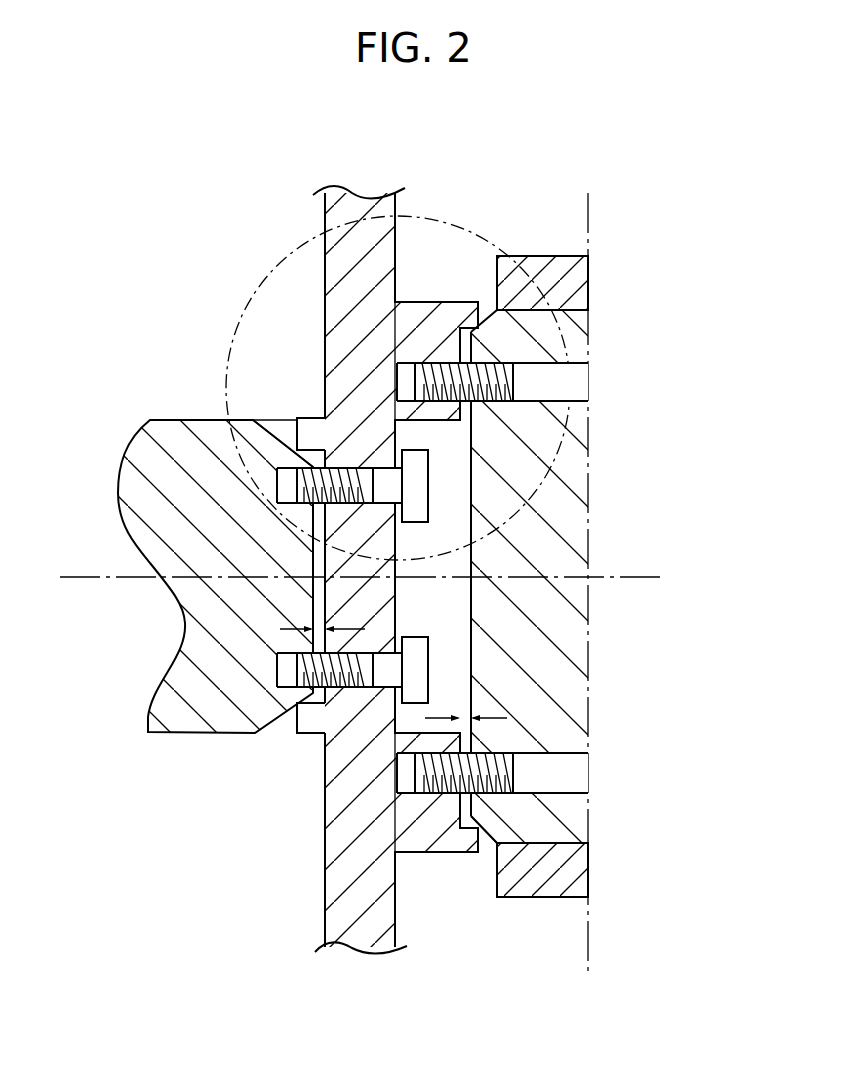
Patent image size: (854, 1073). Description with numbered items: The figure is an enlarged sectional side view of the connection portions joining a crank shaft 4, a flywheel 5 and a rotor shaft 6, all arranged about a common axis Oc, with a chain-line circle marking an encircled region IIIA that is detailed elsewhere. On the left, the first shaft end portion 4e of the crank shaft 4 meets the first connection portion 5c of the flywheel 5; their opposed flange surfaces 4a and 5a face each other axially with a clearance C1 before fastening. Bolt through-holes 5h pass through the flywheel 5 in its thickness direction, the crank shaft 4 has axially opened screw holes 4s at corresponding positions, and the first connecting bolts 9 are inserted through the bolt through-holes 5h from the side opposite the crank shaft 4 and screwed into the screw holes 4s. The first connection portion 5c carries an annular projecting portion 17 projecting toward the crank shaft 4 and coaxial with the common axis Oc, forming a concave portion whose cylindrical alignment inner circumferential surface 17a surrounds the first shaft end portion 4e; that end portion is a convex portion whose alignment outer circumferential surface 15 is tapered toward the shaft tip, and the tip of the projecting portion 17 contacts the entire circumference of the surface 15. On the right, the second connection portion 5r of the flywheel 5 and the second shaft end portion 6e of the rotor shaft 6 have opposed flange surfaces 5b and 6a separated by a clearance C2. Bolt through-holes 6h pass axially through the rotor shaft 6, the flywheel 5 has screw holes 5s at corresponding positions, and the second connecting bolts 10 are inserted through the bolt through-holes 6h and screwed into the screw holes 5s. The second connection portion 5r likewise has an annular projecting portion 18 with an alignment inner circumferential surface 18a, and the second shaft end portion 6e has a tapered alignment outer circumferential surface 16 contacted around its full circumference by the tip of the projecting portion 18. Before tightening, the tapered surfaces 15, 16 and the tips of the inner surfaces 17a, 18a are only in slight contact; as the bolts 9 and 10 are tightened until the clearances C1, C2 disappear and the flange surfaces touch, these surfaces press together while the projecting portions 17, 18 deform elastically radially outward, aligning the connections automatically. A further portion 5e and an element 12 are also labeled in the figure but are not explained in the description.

The crank shaft 4 is at (123, 475).
The flange surface 4a is at (313, 538).
The first shaft end portion 4e is at (285, 438).
The screw holes 4s is at (305, 470).
The flywheel 5 is at (353, 930).
The flange surface 5a is at (325, 552).
The flange surface 5b is at (473, 406).
The first connection portion 5c is at (312, 747).
The outer side face of intermediate member 5e is at (393, 381).
The bolt through-holes 5h is at (350, 470).
The second connection portion 5r is at (466, 866).
The screw holes 5s is at (398, 795).
The rotor shaft 6 is at (548, 855).
The flange surface 6a is at (458, 342).
The second shaft end portion 6e is at (488, 862).
The bolt through-holes 6h is at (530, 401).
The first connecting bolts 9 is at (430, 492).
The second connecting bolts 10 is at (540, 362).
The ring member 12 is at (545, 256).
The alignment outer circumferential surface 15 is at (262, 416).
The alignment outer circumferential surface 16 is at (492, 345).
The annular projecting portion 17 is at (296, 722).
The alignment inner circumferential surface 17a is at (286, 711).
The annular projecting portion 18 is at (469, 858).
The alignment inner circumferential surface 18a is at (528, 322).
The clearance C1 is at (305, 633).
The clearance C2 is at (484, 723).
The common axis Oc is at (381, 584).
The detail region IIIA is at (285, 258).